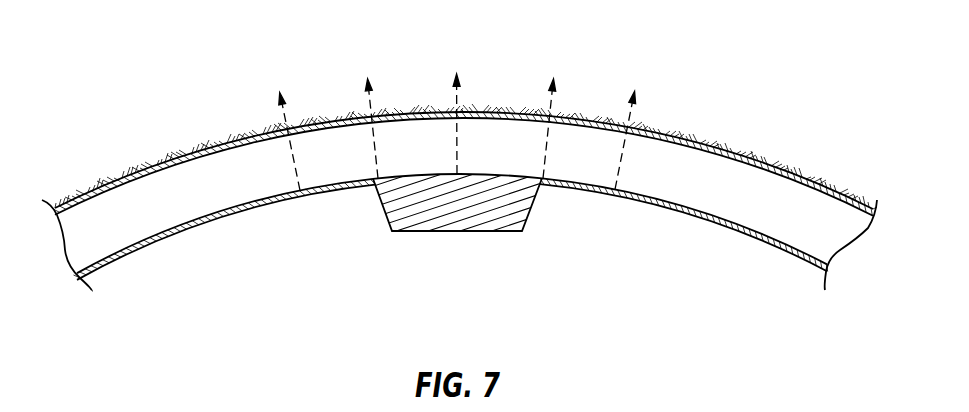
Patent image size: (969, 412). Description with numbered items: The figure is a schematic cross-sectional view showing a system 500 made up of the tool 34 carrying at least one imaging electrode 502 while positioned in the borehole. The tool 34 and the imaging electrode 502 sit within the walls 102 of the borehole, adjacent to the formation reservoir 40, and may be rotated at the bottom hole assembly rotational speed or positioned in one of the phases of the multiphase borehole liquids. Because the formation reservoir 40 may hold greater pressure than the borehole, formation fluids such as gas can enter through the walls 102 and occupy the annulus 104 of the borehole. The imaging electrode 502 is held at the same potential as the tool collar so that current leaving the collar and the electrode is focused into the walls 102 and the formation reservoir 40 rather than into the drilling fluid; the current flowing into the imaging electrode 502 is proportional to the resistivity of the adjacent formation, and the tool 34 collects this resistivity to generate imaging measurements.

The system 500 is at (447, 159).
The formation reservoir 40 is at (324, 108).
The walls of the borehole 102 is at (215, 149).
The annulus 104 is at (147, 198).
The tool 34 is at (598, 256).
The imaging electrode 502 is at (457, 232).